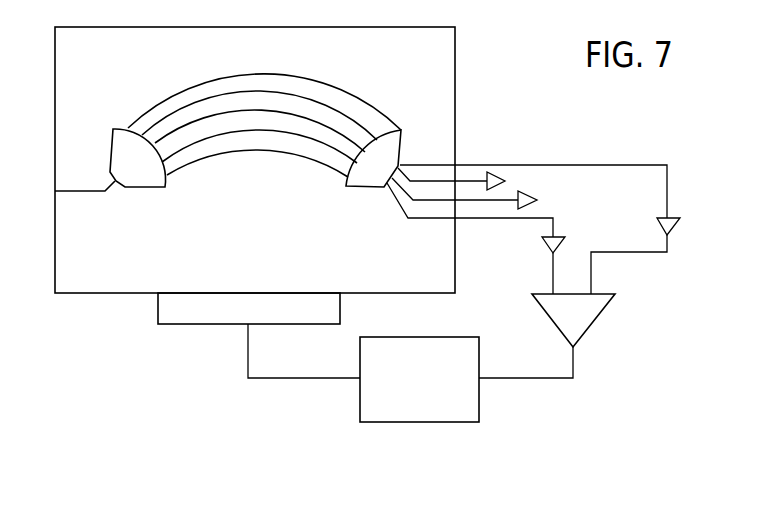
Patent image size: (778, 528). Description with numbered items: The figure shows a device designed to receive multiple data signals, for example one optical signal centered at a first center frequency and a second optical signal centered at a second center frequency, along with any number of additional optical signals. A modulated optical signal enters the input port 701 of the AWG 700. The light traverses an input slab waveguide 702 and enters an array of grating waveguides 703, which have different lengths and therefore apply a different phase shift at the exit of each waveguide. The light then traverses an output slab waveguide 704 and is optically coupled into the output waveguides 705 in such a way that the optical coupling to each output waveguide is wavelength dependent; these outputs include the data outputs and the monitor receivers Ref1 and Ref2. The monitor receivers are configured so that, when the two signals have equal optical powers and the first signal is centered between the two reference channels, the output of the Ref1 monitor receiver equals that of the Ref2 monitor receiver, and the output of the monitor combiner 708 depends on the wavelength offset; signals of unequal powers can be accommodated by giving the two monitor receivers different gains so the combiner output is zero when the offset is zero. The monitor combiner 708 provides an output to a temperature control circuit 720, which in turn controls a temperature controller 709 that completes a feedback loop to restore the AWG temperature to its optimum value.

The AWG 700 is at (455, 60).
The input port 701 is at (66, 191).
The input slab waveguide 702 is at (140, 188).
The grating waveguides 703 is at (203, 80).
The output slab waveguide 704 is at (360, 188).
The output waveguides 705 is at (505, 181).
The monitor combiner 708 is at (590, 328).
The temperature controller 709 is at (194, 325).
The temperature control circuit 720 is at (383, 423).